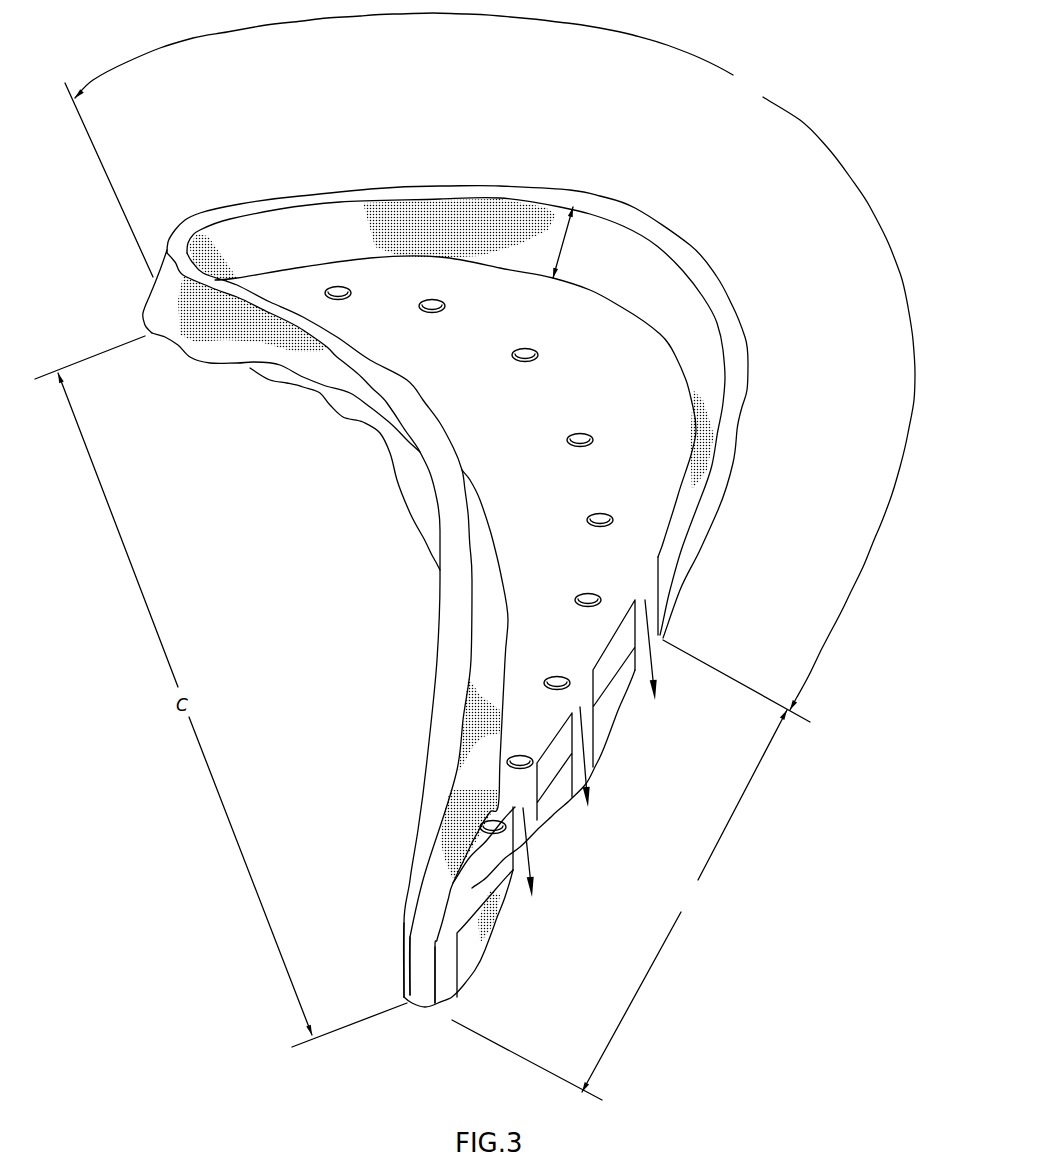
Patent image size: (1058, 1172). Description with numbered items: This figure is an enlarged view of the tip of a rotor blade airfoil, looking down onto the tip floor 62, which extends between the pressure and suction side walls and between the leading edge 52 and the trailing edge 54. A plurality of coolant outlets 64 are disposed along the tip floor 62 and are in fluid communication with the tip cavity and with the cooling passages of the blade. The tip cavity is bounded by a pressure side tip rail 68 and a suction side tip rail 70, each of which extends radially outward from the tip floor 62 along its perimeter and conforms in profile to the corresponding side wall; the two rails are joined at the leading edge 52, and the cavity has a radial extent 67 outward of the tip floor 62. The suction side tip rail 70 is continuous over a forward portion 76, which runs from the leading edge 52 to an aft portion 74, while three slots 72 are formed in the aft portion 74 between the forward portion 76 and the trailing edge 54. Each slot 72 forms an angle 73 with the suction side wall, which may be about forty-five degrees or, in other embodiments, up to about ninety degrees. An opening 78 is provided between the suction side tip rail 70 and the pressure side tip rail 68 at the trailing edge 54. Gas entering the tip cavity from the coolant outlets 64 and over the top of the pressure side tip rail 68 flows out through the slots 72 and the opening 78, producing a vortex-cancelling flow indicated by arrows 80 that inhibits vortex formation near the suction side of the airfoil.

The leading edge 52 is at (153, 278).
The trailing edge 54 is at (420, 1000).
The tip floor 62 is at (598, 385).
The coolant outlets 64 is at (510, 357).
The radial extent 67 is at (557, 248).
The pressure side tip rail 68 is at (252, 360).
The suction side tip rail 70 is at (252, 203).
The slots 72 is at (642, 592).
The angle 73 is at (525, 785).
The aft portion 74 is at (631, 870).
The forward portion 76 is at (490, 361).
The opening 78 is at (420, 970).
The arrows 80 is at (655, 675).